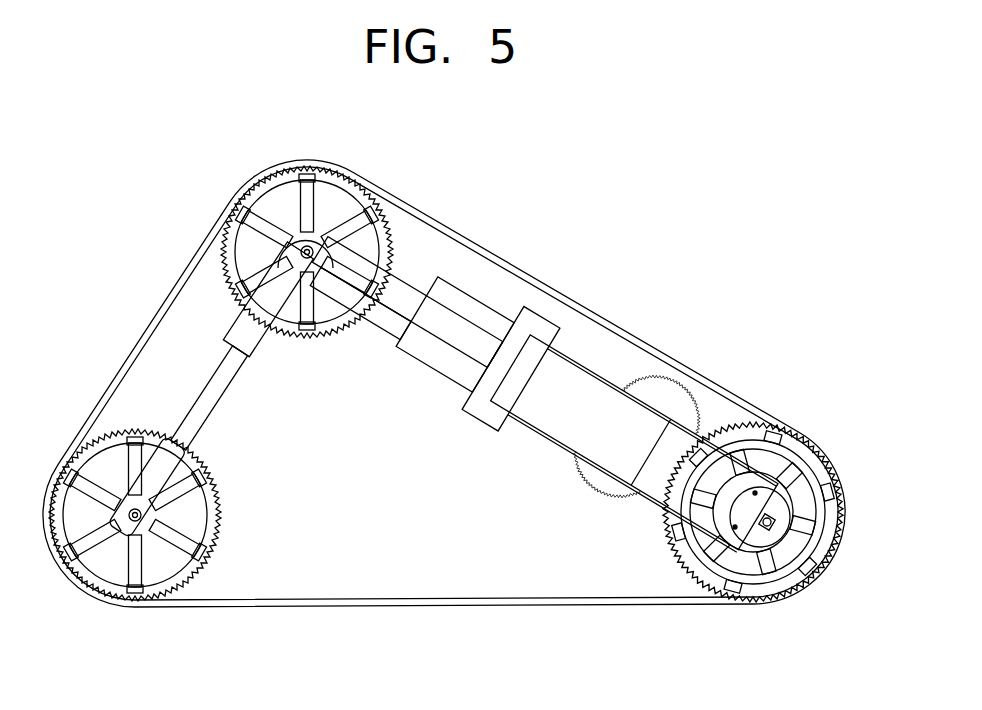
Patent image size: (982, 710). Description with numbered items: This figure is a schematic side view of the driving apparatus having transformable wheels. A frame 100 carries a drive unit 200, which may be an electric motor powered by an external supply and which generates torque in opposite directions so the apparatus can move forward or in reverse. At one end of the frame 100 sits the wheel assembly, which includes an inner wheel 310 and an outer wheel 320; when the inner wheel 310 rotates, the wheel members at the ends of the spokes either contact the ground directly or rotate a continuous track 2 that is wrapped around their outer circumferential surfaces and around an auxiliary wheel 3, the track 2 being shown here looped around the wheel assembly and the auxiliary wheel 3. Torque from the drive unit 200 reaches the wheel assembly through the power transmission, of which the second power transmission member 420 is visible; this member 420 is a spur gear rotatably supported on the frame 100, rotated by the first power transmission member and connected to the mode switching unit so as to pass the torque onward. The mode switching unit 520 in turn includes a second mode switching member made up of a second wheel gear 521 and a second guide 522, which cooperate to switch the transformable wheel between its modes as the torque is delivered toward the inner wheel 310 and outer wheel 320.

The track belt 2 is at (500, 607).
The auxiliary wheel 3 is at (178, 545).
The frame 100 is at (243, 323).
The drive unit 200 is at (405, 278).
The inner wheel 310 is at (768, 520).
The outer wheel 320 is at (822, 537).
The second power transmission member 420 is at (652, 392).
The reduction unit 520 is at (774, 494).
The second wheel gear 521 is at (783, 457).
The second guide 522 is at (768, 520).